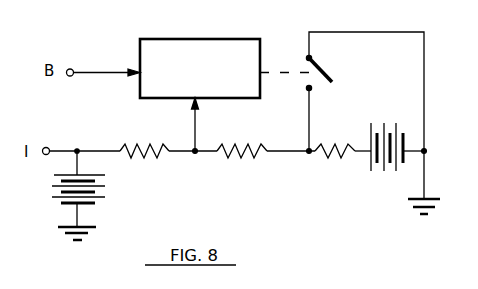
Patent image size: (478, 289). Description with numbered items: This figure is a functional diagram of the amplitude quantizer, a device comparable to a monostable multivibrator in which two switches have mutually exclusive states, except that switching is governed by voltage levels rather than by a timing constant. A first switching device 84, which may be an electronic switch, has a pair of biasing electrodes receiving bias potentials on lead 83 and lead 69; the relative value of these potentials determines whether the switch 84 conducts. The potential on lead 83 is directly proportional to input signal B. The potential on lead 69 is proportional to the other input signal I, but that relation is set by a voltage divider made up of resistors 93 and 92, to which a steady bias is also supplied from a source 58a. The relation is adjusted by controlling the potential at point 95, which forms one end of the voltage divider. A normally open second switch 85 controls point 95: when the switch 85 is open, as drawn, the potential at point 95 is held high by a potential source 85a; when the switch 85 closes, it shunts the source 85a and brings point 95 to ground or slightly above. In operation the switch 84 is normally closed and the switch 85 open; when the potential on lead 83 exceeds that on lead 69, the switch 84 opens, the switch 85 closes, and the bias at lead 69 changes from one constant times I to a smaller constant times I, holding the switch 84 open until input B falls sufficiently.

The lead 83 is at (78, 72).
The first switching device 84 is at (192, 54).
The lead 69 is at (197, 130).
The second switch 85 is at (320, 64).
The potential source 85a is at (371, 148).
The resistor 93 is at (139, 158).
The resistor 92 is at (247, 153).
The point 95 is at (312, 153).
The source 58a is at (100, 186).